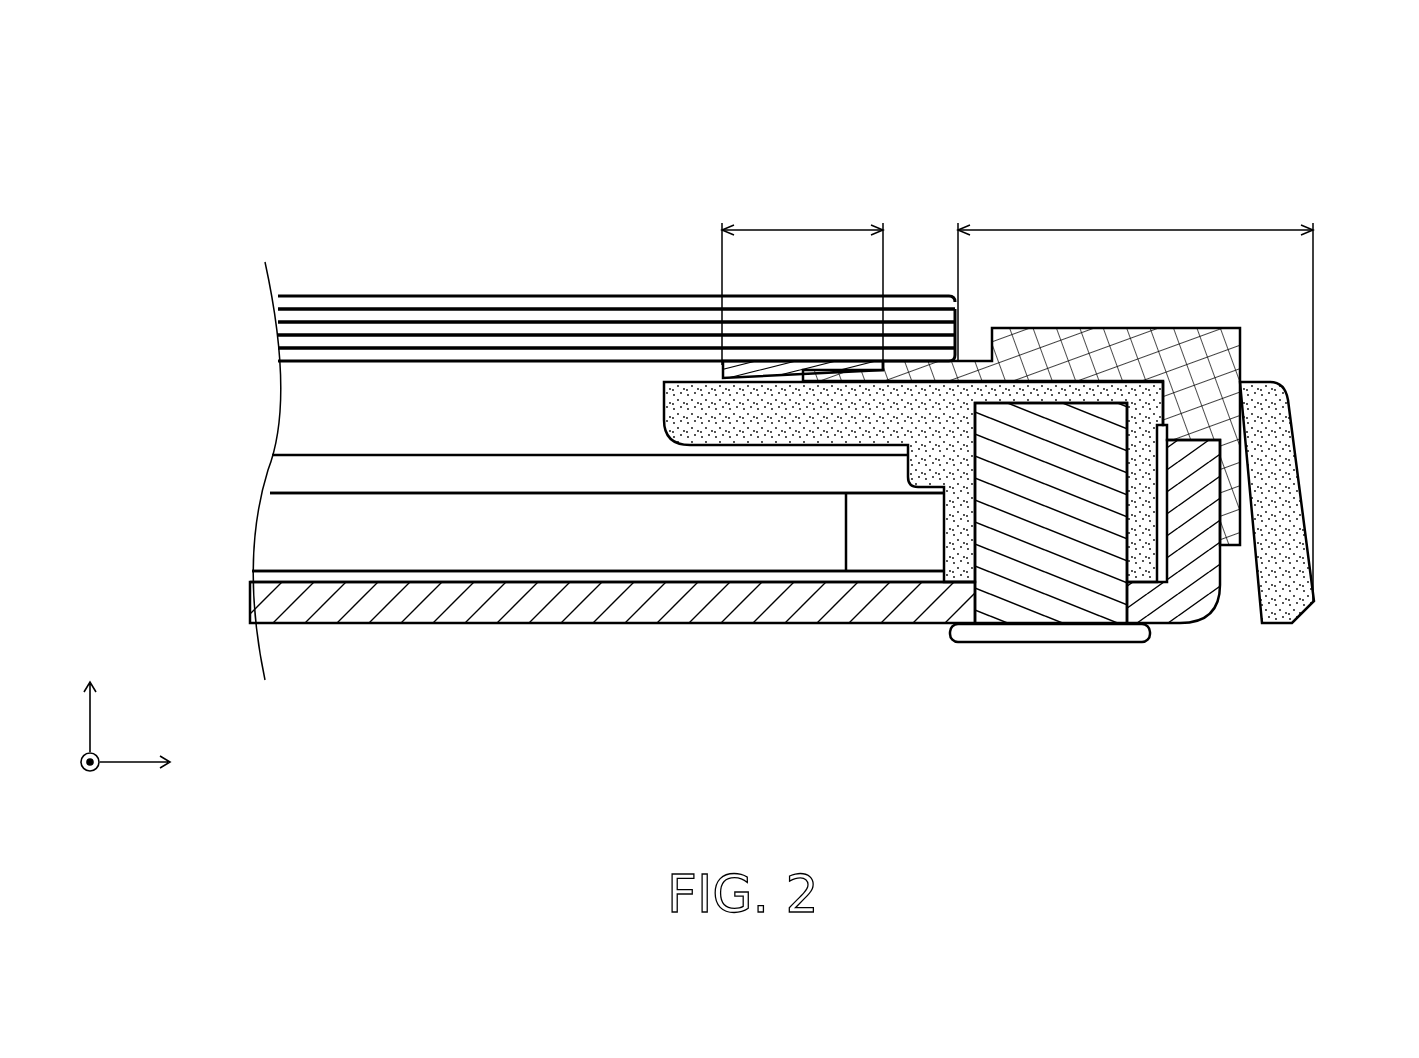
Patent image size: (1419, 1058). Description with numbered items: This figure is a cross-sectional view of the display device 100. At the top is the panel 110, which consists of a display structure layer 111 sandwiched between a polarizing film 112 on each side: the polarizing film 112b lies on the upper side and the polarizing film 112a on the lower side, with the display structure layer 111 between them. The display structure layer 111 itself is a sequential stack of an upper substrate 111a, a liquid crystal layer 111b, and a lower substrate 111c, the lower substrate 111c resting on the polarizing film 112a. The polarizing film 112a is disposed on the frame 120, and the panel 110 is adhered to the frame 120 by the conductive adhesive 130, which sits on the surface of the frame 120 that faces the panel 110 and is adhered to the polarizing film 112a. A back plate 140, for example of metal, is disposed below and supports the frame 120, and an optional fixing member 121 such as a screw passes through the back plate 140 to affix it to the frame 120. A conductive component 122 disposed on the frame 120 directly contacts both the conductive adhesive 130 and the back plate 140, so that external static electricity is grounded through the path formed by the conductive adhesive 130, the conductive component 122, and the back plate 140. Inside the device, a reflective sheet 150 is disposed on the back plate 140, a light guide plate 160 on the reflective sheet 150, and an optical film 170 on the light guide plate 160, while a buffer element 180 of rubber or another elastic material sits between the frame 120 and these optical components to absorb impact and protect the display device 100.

The display device 100 is at (160, 63).
The panel 110 is at (226, 100).
The display structure layer 111 is at (354, 100).
The upper substrate 111a is at (310, 314).
The liquid crystal layer 111b is at (308, 327).
The lower substrate 111c is at (310, 345).
The polarizing film 112 is at (500, 192).
The polarizing film 112a is at (337, 357).
The polarizing film 112b is at (337, 302).
The frame 120 is at (1273, 490).
The fixing member 121 is at (1058, 545).
The conductive component 122 is at (1212, 388).
The conductive adhesive 130 is at (722, 372).
The back plate 140 is at (530, 600).
The reflective sheet 150 is at (308, 578).
The light guide plate 160 is at (308, 537).
The optical film 170 is at (330, 473).
The buffer element 180 is at (893, 538).